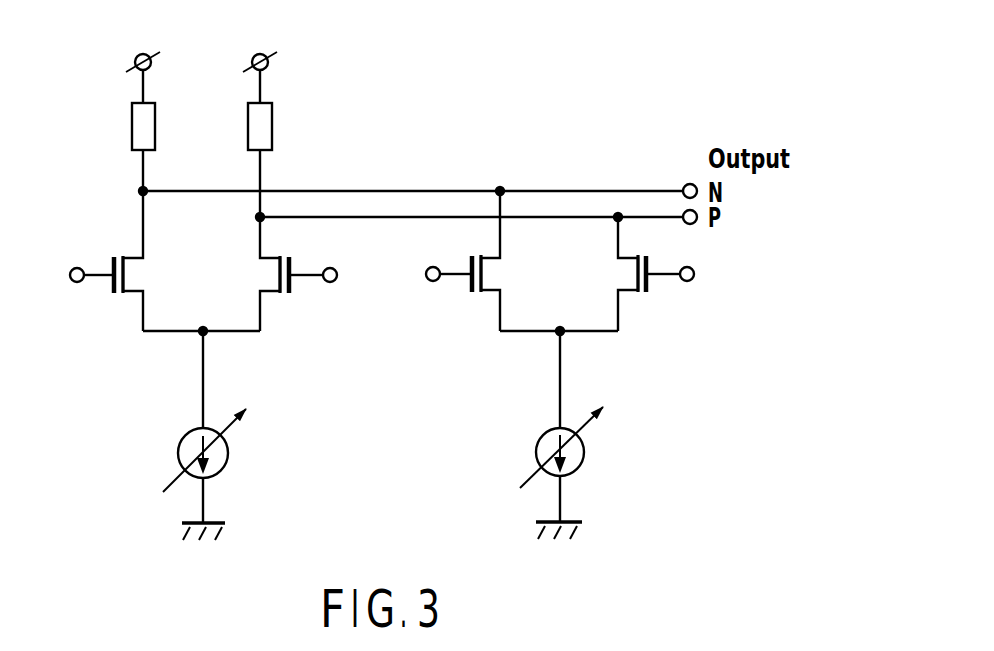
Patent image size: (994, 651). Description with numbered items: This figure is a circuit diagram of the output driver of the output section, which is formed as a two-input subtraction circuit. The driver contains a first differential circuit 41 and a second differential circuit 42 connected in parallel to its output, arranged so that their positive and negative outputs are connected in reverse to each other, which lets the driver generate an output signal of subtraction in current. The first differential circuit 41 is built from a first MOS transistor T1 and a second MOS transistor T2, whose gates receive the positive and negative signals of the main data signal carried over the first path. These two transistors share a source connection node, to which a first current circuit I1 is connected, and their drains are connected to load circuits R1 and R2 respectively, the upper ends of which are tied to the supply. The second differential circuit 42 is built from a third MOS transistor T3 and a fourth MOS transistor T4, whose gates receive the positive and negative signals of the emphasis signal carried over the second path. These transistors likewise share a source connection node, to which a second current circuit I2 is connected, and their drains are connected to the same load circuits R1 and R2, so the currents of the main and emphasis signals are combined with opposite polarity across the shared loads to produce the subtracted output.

The first differential circuit 41 is at (120, 208).
The second differential circuit 42 is at (583, 177).
The load circuit R1 is at (123, 103).
The load circuit R2 is at (273, 116).
The first MOS transistor T1 is at (130, 277).
The second MOS transistor T2 is at (272, 277).
The third MOS transistor T3 is at (634, 276).
The fourth MOS transistor T4 is at (487, 276).
The first current circuit I1 is at (189, 458).
The second current circuit I2 is at (547, 458).